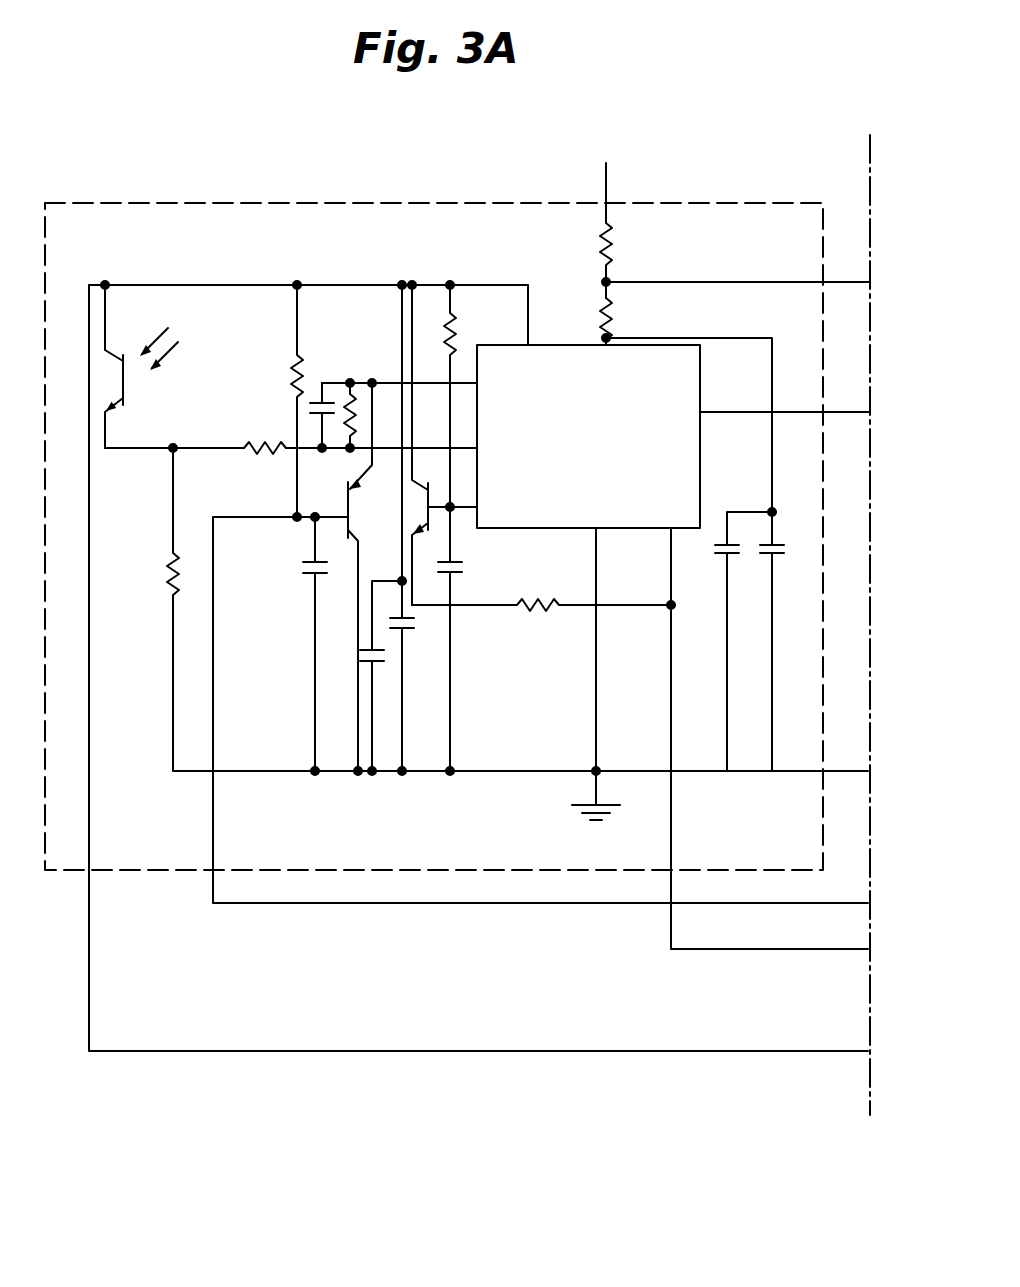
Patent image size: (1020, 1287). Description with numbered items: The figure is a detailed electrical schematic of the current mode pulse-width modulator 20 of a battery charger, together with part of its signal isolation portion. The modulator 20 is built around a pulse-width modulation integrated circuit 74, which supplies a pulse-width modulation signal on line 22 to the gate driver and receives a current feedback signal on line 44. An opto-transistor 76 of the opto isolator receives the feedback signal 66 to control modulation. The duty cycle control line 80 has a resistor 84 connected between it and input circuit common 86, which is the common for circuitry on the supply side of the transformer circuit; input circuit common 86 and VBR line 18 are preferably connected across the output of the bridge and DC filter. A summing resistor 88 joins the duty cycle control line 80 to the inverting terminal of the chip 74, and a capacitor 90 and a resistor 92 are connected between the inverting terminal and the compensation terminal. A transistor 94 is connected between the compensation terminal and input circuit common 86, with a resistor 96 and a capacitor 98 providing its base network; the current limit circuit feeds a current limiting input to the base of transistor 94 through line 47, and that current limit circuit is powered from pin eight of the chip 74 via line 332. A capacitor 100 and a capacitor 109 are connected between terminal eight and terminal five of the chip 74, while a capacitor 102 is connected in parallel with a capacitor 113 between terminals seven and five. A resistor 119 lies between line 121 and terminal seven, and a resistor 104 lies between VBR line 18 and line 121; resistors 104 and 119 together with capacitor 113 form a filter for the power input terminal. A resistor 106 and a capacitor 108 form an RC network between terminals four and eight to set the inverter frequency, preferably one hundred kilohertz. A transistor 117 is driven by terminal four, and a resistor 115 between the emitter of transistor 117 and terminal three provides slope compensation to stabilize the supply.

The VBR line 18 is at (608, 193).
The current mode pulse-width modulator 20 is at (153, 870).
The line 22 is at (837, 413).
The line 44 is at (737, 950).
The line 47 is at (430, 903).
The feedback signal 66 is at (167, 328).
The pulse-width modulation integrated circuit 74 is at (613, 528).
The opto-transistor 76 is at (112, 357).
The duty cycle control line 80 is at (192, 453).
The resistor 84 is at (173, 574).
The input circuit common 86 is at (595, 785).
The summing resistor 88 is at (252, 457).
The capacitor 90 is at (316, 397).
The resistor 92 is at (352, 402).
The transistor 94 is at (353, 532).
The resistor 96 is at (287, 387).
The capacitor 98 is at (307, 577).
The capacitor 100 is at (410, 632).
The capacitor 102 is at (763, 553).
The resistor 104 is at (613, 248).
The resistor 106 is at (455, 326).
The capacitor 108 is at (460, 562).
The capacitor 109 is at (368, 668).
The capacitor 113 is at (717, 540).
The resistor 115 is at (537, 613).
The transistor 117 is at (424, 477).
The resistor 119 is at (607, 317).
The line 121 is at (732, 280).
The line 332 is at (707, 1053).